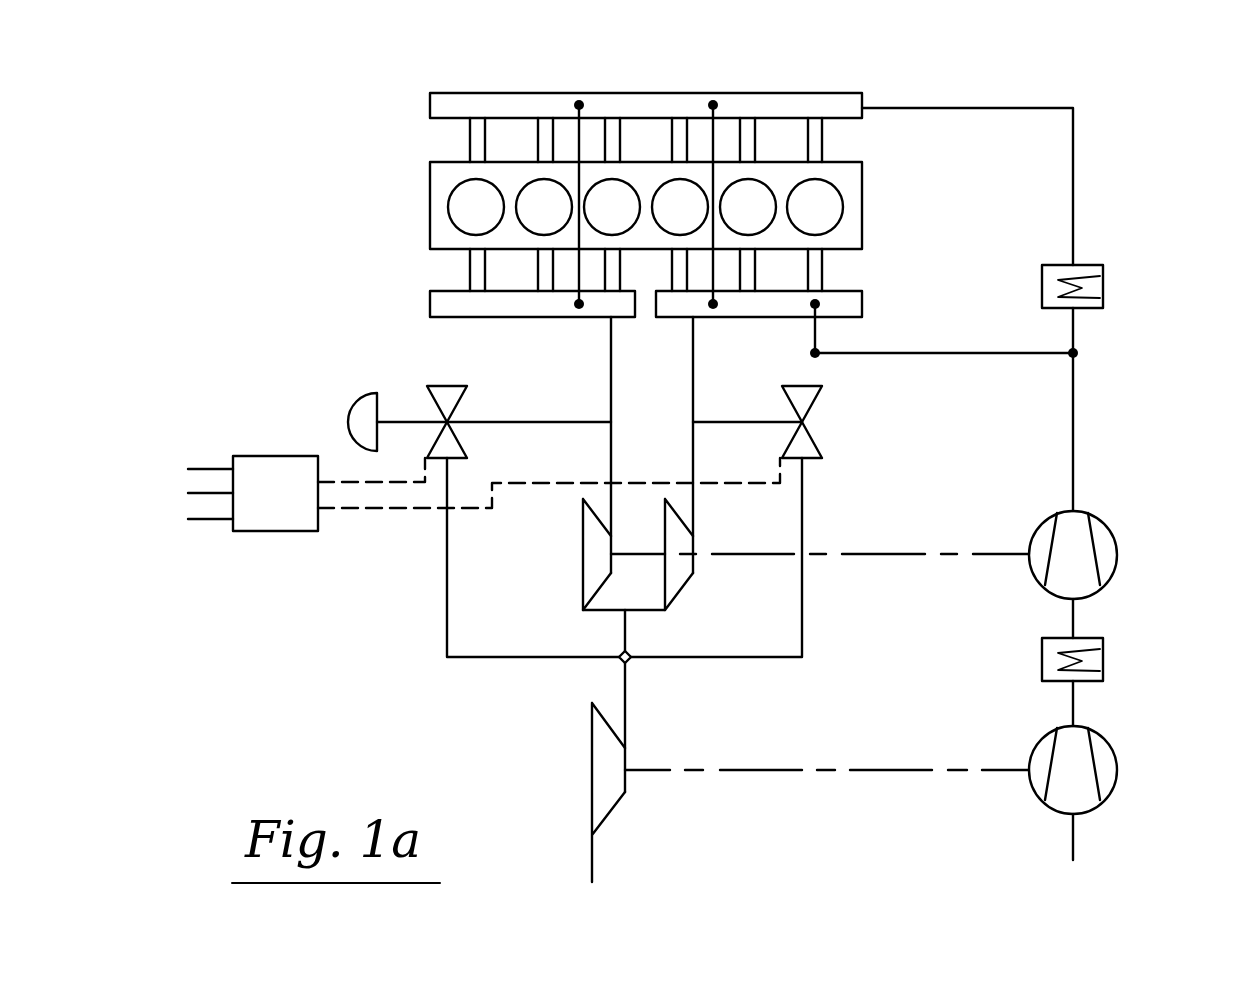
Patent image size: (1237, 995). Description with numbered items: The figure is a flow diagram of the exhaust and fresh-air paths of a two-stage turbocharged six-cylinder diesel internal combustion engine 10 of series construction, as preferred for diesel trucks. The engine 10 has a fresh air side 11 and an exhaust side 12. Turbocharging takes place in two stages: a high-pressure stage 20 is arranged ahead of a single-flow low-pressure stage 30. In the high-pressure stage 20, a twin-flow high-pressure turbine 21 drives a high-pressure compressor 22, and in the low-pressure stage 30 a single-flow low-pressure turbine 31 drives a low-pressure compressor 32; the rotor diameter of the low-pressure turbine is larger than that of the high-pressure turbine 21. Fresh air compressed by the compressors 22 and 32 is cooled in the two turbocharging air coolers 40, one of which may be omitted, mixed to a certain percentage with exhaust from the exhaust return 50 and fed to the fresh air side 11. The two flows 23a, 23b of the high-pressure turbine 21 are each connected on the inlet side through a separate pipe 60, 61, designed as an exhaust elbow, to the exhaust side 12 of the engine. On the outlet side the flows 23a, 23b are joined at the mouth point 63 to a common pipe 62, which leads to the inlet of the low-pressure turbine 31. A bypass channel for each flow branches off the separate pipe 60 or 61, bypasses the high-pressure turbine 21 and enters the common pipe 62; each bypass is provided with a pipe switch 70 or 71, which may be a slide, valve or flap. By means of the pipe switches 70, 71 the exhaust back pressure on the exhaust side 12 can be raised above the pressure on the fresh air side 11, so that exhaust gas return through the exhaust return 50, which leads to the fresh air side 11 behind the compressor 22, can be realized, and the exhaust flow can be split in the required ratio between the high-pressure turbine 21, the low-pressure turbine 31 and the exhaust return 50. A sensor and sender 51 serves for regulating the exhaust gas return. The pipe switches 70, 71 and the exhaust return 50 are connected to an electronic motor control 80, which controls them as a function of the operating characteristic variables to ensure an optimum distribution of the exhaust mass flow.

The internal combustion engine 10 is at (700, 196).
The fresh air side 11 is at (793, 97).
The exhaust side 12 is at (672, 318).
The high-pressure stage 20 is at (420, 601).
The high-pressure turbine 21 is at (632, 530).
The high-pressure compressor 22 is at (1112, 541).
The flow 23a is at (590, 574).
The flow 23b is at (678, 580).
The low-pressure stage 30 is at (894, 696).
The low-pressure turbine 31 is at (625, 792).
The low-pressure compressor 32 is at (1117, 763).
The turbocharging air cooler 40 is at (1103, 288).
The exhaust return with EGR pipe switch 50 is at (713, 277).
The sensor and sender for regulating EGR 51 is at (357, 400).
The pipe 60 is at (611, 360).
The pipe 61 is at (693, 380).
The pipe 62 is at (627, 705).
The mouth point 63 is at (628, 660).
The pipe switch 70 is at (438, 385).
The pipe switch 71 is at (815, 397).
The motor control 80 is at (282, 531).